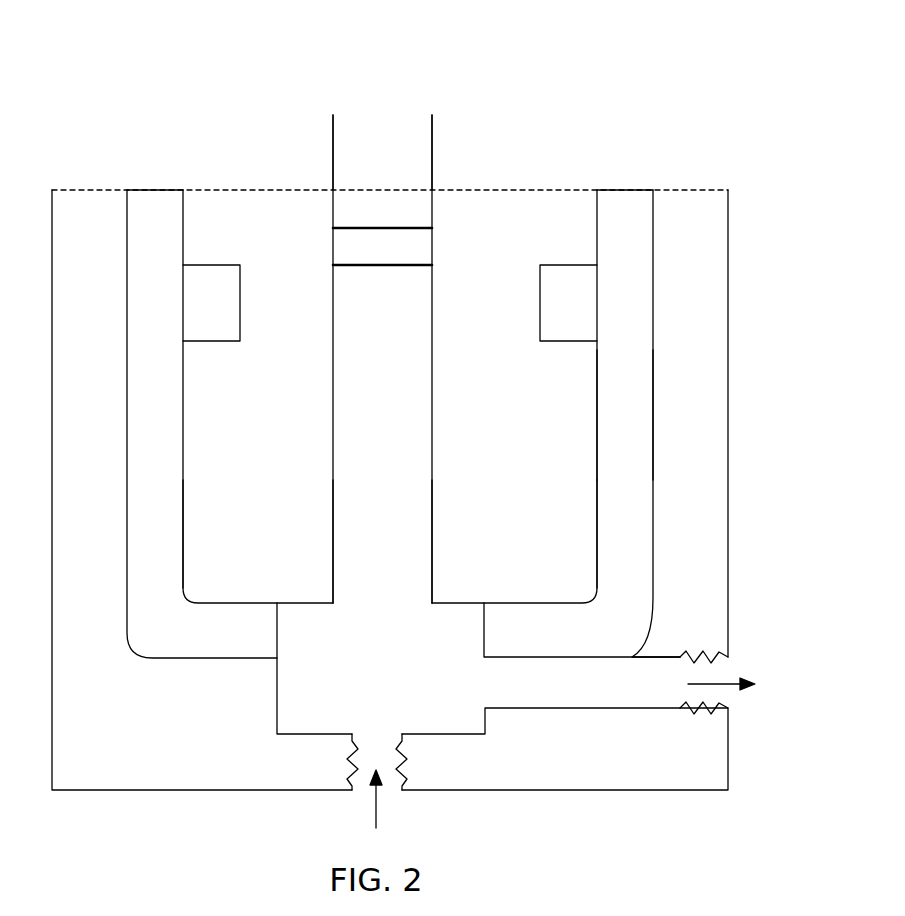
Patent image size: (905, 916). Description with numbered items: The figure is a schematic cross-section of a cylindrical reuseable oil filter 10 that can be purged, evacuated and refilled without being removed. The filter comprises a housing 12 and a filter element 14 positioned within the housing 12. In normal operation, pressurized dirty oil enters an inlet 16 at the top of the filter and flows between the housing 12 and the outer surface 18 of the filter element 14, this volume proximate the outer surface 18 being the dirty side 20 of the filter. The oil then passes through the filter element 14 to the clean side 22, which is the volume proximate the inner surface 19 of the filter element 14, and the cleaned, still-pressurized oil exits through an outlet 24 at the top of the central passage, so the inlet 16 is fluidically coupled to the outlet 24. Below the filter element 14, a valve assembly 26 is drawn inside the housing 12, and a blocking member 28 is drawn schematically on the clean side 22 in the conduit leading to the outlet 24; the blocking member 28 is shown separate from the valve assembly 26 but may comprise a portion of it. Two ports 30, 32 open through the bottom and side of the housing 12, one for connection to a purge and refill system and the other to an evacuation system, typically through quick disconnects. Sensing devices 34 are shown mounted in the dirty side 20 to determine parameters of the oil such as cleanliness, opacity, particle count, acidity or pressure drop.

The reuseable oil filter 10 is at (692, 38).
The housing 12 is at (728, 335).
The filter element 14 is at (256, 448).
The inlet 16 is at (163, 190).
The outer surface 18 is at (185, 533).
The inner surface 19 is at (333, 527).
The dirty side 20 is at (628, 402).
The clean side 22 is at (373, 429).
The outlet 24 is at (404, 114).
The valve assembly 26 is at (368, 669).
The blocking member 28 is at (417, 248).
The port 30 is at (362, 790).
The port 32 is at (727, 668).
The sensing device 34 is at (200, 313).